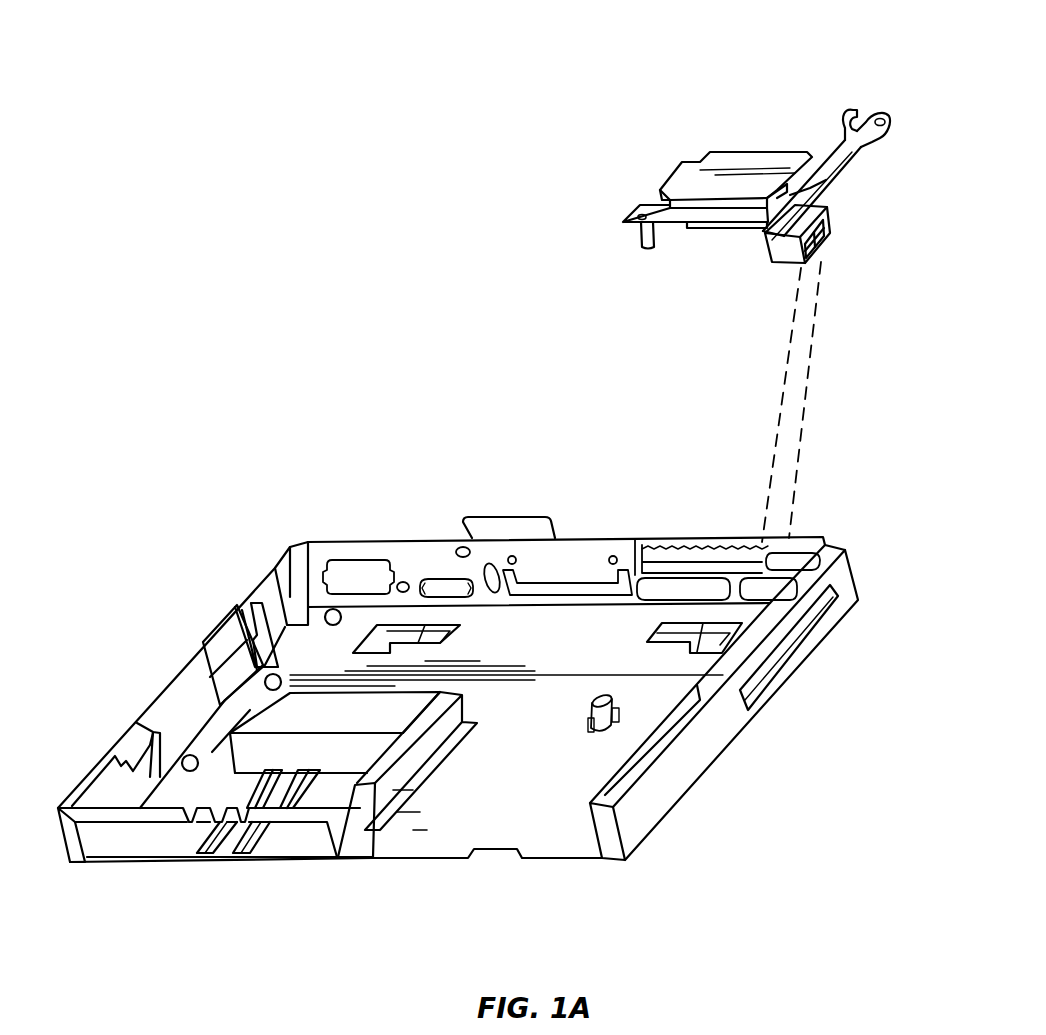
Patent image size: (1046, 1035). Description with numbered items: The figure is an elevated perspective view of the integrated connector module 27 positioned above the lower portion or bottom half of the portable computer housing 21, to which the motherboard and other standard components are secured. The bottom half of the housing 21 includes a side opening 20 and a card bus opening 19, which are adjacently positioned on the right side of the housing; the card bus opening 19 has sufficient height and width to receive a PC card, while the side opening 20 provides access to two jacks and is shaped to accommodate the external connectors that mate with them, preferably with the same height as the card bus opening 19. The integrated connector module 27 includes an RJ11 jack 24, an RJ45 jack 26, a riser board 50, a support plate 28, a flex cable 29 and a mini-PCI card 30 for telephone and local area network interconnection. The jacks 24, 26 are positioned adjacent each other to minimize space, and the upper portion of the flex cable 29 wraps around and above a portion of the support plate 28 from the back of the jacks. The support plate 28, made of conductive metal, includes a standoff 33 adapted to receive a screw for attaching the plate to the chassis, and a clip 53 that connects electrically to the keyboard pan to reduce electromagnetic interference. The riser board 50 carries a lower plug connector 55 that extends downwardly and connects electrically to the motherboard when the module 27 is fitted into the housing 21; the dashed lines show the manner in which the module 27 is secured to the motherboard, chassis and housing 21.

The card bus opening 19 is at (757, 705).
The side opening 20 is at (760, 682).
The portable computer housing 21 is at (491, 707).
The RJ11 jack 24 is at (832, 227).
The RJ45 jack 26 is at (782, 255).
The integrated connector module 27 is at (722, 133).
The support plate 28 is at (837, 152).
The flex cable 29 is at (810, 188).
The mini-PCI card 30 is at (683, 172).
The standoff 33 is at (638, 238).
The riser board 50 is at (673, 222).
The clip 53 is at (846, 110).
The lower plug connector 55 is at (712, 229).